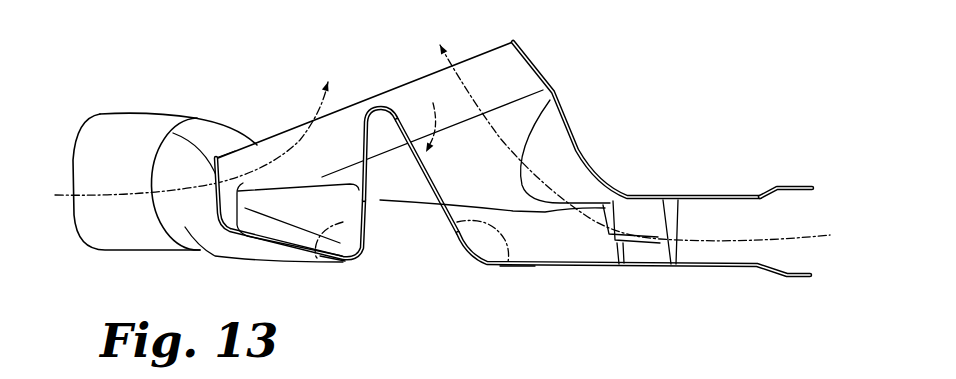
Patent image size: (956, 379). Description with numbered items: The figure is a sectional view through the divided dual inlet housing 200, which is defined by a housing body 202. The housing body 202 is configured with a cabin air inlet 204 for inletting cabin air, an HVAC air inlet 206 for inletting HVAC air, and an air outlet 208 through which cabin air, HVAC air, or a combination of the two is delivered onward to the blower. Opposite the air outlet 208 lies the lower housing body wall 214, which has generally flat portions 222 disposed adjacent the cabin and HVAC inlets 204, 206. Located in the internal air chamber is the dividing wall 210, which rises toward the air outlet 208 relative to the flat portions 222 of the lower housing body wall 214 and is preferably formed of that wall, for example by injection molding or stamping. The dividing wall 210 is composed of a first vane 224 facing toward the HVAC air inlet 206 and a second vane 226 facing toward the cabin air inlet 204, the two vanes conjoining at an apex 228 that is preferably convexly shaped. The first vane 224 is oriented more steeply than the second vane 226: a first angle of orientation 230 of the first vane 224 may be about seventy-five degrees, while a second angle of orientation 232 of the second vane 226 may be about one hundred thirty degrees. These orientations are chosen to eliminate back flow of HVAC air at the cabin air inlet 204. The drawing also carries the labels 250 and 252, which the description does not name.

The divided dual inlet housing 200 is at (614, 102).
The housing body 202 is at (571, 106).
The cabin air inlet 204 is at (822, 187).
The HVAC air inlet 206 is at (89, 118).
The air outlet 208 is at (382, 88).
The dividing wall 210 is at (432, 116).
The lower housing body wall 214 is at (575, 267).
The generally flat portions 222 is at (333, 263).
The first vane 224 is at (360, 153).
The second vane 226 is at (427, 177).
The apex 228 is at (387, 110).
The first angle of orientation 230 is at (343, 222).
The second angle of orientation 232 is at (497, 232).
The rib 250 is at (530, 173).
The tab 252 is at (283, 152).